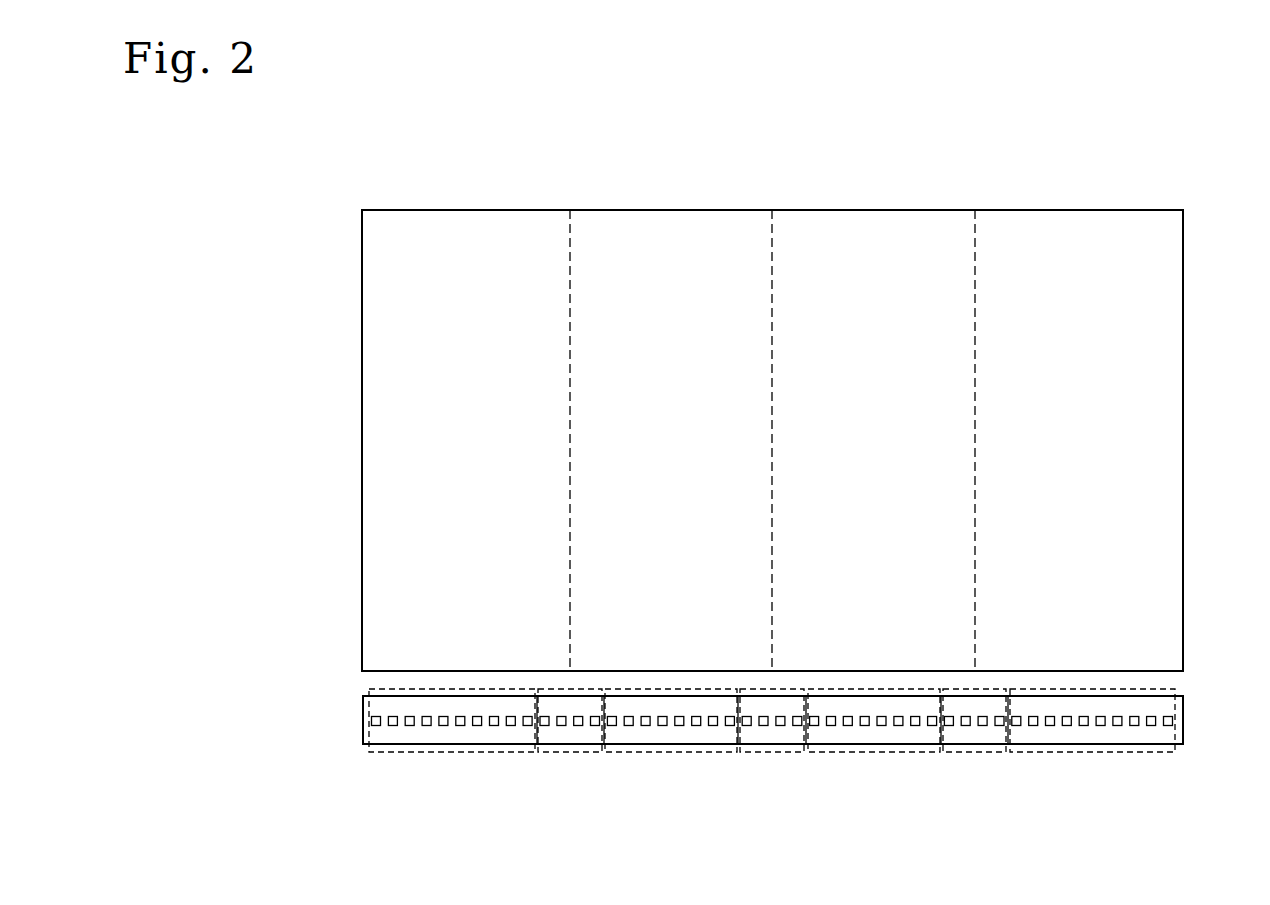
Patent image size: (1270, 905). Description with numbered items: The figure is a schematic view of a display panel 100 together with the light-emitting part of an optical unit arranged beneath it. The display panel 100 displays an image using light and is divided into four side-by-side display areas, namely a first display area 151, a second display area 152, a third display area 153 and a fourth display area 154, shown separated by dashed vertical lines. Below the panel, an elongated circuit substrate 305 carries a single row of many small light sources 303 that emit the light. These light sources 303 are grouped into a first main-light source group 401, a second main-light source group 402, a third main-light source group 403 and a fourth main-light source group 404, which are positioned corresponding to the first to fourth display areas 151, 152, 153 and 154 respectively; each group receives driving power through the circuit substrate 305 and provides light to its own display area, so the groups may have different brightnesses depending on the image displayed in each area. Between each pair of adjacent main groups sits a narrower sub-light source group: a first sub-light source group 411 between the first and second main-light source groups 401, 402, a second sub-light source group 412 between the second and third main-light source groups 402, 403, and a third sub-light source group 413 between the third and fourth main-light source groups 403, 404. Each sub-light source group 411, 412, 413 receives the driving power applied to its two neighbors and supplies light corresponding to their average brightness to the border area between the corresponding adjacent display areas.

The display panel 100 is at (1185, 280).
The first display area 151 is at (458, 236).
The second display area 152 is at (664, 236).
The third display area 153 is at (866, 236).
The fourth display area 154 is at (1066, 236).
The light source 303 is at (1172, 722).
The circuit substrate 305 is at (1183, 705).
The first main-light source group 401 is at (443, 752).
The second main-light source group 402 is at (666, 752).
The third main-light source group 403 is at (868, 752).
The fourth main-light source group 404 is at (1087, 752).
The first sub-light source group 411 is at (569, 752).
The second sub-light source group 412 is at (772, 752).
The third sub-light source group 413 is at (973, 752).